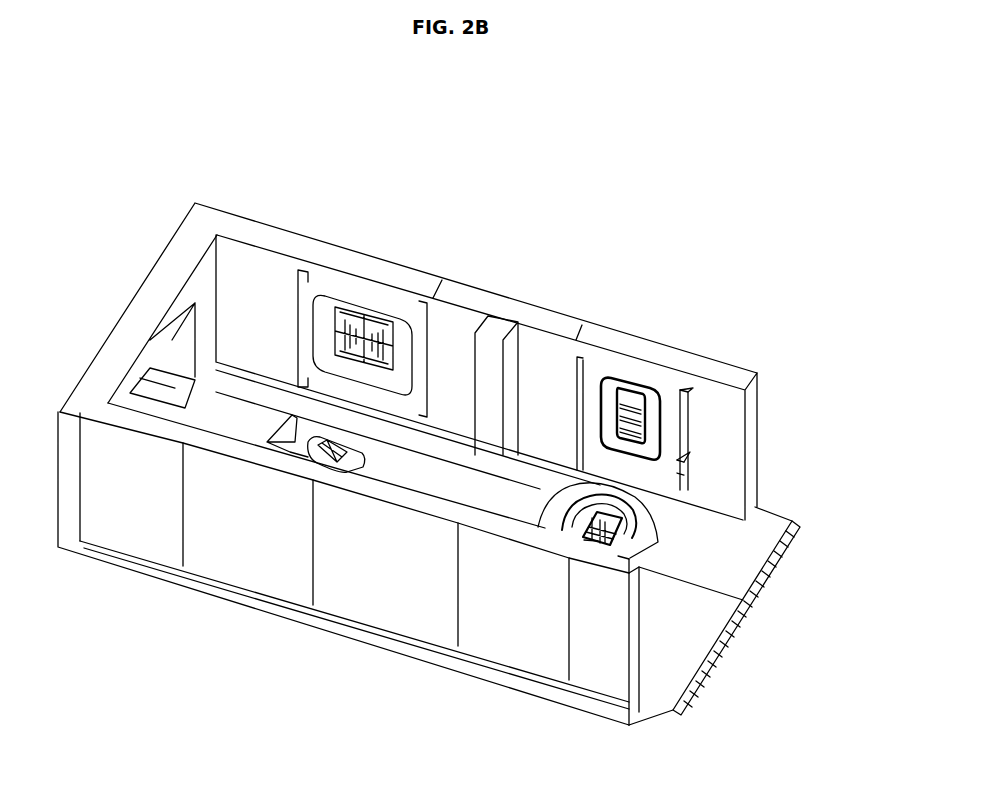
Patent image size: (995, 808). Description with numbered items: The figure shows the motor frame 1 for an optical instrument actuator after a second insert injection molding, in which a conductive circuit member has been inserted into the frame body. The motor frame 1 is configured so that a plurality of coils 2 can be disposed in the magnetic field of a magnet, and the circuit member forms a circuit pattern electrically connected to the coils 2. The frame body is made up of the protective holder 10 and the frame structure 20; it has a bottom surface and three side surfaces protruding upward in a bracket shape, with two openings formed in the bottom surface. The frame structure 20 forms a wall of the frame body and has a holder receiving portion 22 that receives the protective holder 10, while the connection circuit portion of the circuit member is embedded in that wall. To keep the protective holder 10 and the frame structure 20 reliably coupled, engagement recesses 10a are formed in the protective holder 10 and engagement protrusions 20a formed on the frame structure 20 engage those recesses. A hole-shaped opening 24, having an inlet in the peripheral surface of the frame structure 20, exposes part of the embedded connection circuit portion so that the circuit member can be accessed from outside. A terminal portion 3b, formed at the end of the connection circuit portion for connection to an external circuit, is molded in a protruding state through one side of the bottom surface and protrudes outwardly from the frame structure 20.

The motor frame 1 is at (163, 167).
The coil 2 is at (362, 300).
The terminal portion 3b is at (797, 534).
The protective holder 10 is at (391, 238).
The engagement recess 10a is at (690, 452).
The frame structure 20 is at (213, 200).
The engagement protrusion 20a is at (693, 390).
The holder receiving portion 22 is at (303, 247).
The opening 24 is at (280, 430).